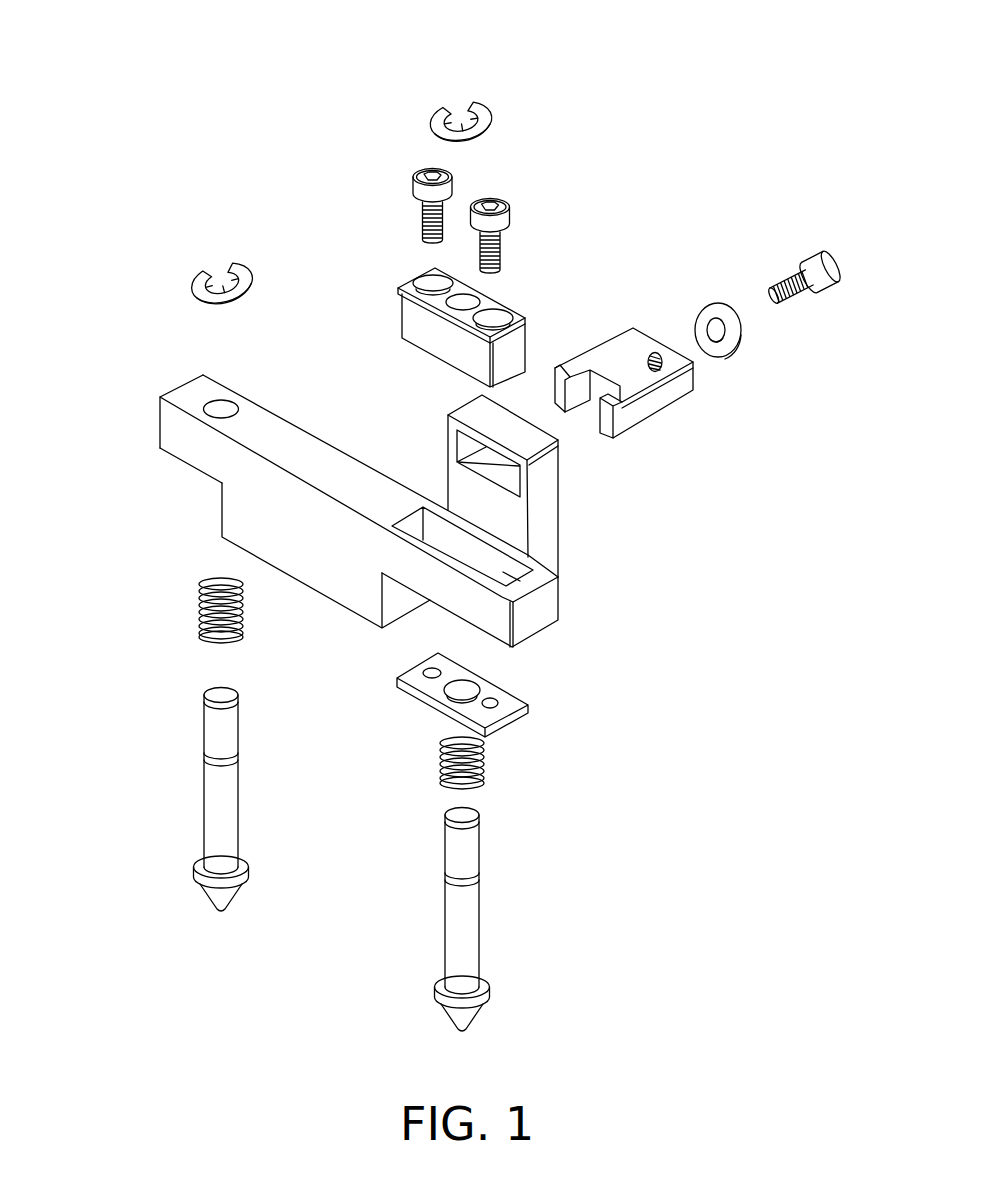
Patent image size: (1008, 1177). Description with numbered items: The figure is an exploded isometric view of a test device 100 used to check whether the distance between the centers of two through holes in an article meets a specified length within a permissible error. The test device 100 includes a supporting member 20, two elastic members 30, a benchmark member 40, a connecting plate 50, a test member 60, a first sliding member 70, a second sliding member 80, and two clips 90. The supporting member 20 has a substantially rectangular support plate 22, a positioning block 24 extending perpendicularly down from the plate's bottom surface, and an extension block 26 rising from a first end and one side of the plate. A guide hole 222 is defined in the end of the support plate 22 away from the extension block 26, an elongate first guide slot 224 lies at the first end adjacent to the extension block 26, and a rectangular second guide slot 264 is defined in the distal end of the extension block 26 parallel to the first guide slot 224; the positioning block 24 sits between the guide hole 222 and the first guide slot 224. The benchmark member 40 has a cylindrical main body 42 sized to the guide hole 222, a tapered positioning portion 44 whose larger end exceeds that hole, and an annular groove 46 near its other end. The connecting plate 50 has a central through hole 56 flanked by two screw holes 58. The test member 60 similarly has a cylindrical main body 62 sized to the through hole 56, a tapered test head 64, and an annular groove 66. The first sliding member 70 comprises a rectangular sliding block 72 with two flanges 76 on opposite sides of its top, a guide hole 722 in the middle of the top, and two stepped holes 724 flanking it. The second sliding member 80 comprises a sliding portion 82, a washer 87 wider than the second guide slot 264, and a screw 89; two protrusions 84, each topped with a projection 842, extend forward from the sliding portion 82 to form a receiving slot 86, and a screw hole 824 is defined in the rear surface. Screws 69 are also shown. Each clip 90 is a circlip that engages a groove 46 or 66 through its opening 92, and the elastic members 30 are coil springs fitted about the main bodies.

The test device 100 is at (226, 58).
The supporting member 20 is at (157, 360).
The support plate 22 is at (168, 427).
The guide hole 222 is at (222, 405).
The positioning block 24 is at (233, 513).
The first guide slot 224 is at (511, 575).
The extension block 26 is at (554, 520).
The second guide slot 264 is at (465, 442).
The elastic member 30 is at (201, 608).
The benchmark member 40 is at (177, 703).
The main body 42 is at (210, 815).
The positioning portion 44 is at (213, 893).
The annular groove 46 is at (226, 762).
The connecting plate 50 is at (560, 700).
The through hole 56 is at (462, 690).
The screw hole 58 is at (490, 703).
The test member 60 is at (515, 820).
The main body 62 is at (452, 915).
The test head 64 is at (455, 1010).
The annular groove 66 is at (468, 885).
The screw 69 is at (510, 225).
The first sliding member 70 is at (392, 258).
The sliding block 72 is at (415, 318).
The guide hole 722 is at (472, 300).
The stepped hole 724 is at (500, 315).
The flange 76 is at (452, 318).
The second sliding member 80 is at (647, 300).
The sliding portion 82 is at (678, 395).
The screw hole 824 is at (655, 353).
The projection 842 is at (556, 366).
The protrusion 84 is at (623, 395).
The receiving slot 86 is at (590, 427).
The washer 87 is at (732, 343).
The screw 89 is at (820, 262).
The clip 90 is at (474, 106).
The opening 92 is at (210, 273).